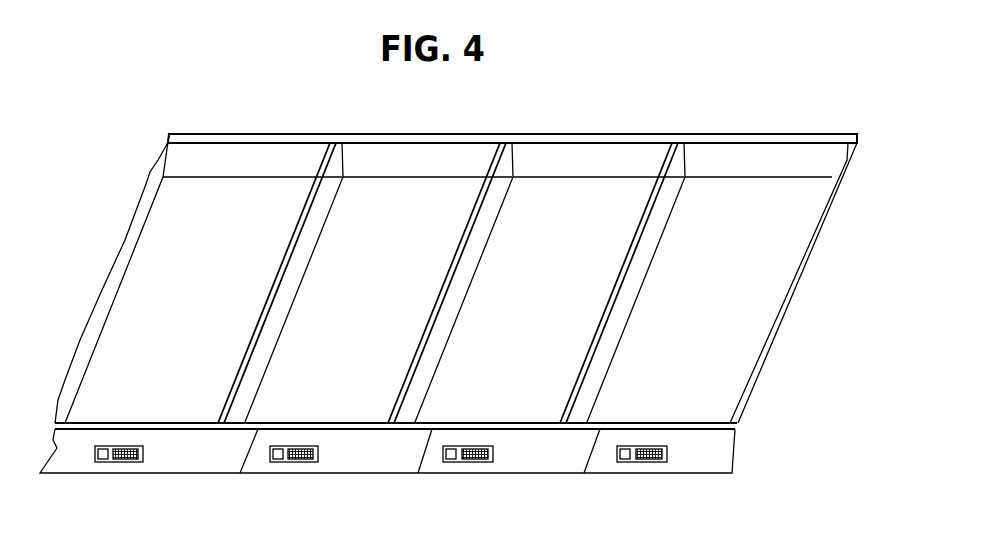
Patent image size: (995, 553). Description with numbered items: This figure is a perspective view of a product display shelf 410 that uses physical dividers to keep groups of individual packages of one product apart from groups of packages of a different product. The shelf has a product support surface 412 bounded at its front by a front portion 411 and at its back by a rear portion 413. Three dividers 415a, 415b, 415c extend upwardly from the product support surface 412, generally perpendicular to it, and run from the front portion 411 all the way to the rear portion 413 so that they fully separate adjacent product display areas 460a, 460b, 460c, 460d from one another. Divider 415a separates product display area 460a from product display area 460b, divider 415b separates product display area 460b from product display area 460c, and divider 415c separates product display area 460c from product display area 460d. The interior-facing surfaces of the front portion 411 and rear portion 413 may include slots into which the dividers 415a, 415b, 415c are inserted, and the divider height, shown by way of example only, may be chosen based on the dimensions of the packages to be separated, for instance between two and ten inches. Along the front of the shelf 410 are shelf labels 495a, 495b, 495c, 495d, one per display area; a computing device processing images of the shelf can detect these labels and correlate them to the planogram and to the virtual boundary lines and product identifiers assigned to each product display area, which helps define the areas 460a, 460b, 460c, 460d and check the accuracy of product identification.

The product display shelf 410 is at (118, 193).
The front portion 411 is at (73, 431).
The product support surface 412 is at (200, 330).
The rear portion 413 is at (268, 133).
The divider 415a is at (242, 402).
The divider 415b is at (416, 401).
The divider 415c is at (587, 404).
The product display area 460a is at (240, 205).
The product display area 460b is at (388, 208).
The product display area 460c is at (585, 203).
The product display area 460d is at (757, 200).
The shelf label 495a is at (143, 453).
The shelf label 495b is at (318, 453).
The shelf label 495c is at (493, 453).
The shelf label 495d is at (667, 453).